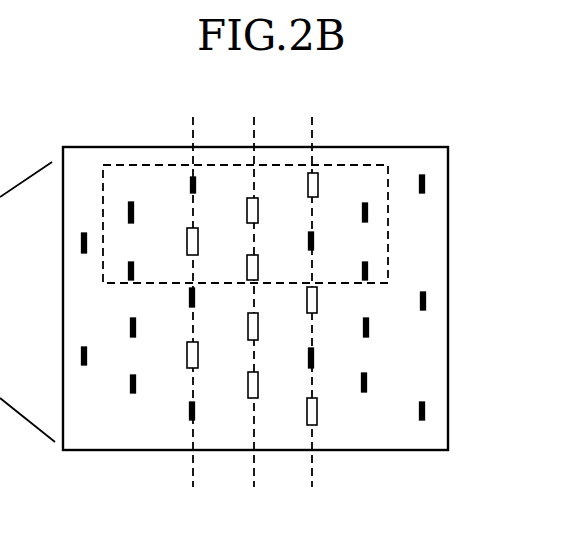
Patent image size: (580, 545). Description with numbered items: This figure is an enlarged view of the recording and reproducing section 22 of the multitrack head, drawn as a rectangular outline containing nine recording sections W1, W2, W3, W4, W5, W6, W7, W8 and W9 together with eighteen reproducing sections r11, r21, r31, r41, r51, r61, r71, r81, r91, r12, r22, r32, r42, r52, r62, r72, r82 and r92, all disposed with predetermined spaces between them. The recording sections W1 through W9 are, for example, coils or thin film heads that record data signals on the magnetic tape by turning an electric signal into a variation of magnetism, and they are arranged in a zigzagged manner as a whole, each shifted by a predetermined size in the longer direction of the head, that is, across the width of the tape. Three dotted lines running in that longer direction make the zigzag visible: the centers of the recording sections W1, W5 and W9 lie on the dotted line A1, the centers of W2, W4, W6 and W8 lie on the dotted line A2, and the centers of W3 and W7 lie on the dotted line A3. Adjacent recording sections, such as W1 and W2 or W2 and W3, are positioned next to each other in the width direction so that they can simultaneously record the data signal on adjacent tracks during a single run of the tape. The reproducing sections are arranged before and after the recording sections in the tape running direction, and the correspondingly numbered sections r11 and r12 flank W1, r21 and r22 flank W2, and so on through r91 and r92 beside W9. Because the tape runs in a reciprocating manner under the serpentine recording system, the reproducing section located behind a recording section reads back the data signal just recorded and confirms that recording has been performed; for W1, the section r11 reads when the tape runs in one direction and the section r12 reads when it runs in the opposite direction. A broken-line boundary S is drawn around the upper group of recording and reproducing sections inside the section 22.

The recording and reproducing section 22 is at (448, 238).
The scan region S is at (222, 165).
The dotted line A1 is at (311, 316).
The dotted line A2 is at (255, 316).
The dotted line A3 is at (194, 316).
The reproducing section r11 is at (196, 185).
The reproducing section r21 is at (133, 203).
The reproducing section r31 is at (82, 240).
The reproducing section r41 is at (134, 262).
The reproducing section r51 is at (190, 297).
The reproducing section r61 is at (131, 324).
The reproducing section r71 is at (82, 353).
The reproducing section r81 is at (131, 393).
The reproducing section r91 is at (190, 405).
The reproducing section r12 is at (425, 183).
The reproducing section r22 is at (368, 213).
The reproducing section r32 is at (314, 240).
The reproducing section r42 is at (368, 272).
The reproducing section r52 is at (421, 302).
The reproducing section r62 is at (370, 328).
The reproducing section r72 is at (314, 358).
The reproducing section r82 is at (368, 382).
The reproducing section r92 is at (426, 412).
The recording section W1 is at (318, 190).
The recording section W2 is at (258, 212).
The recording section W3 is at (198, 243).
The recording section W4 is at (258, 268).
The recording section W5 is at (307, 302).
The recording section W6 is at (248, 325).
The recording section W7 is at (187, 355).
The recording section W8 is at (248, 387).
The recording section W9 is at (307, 410).